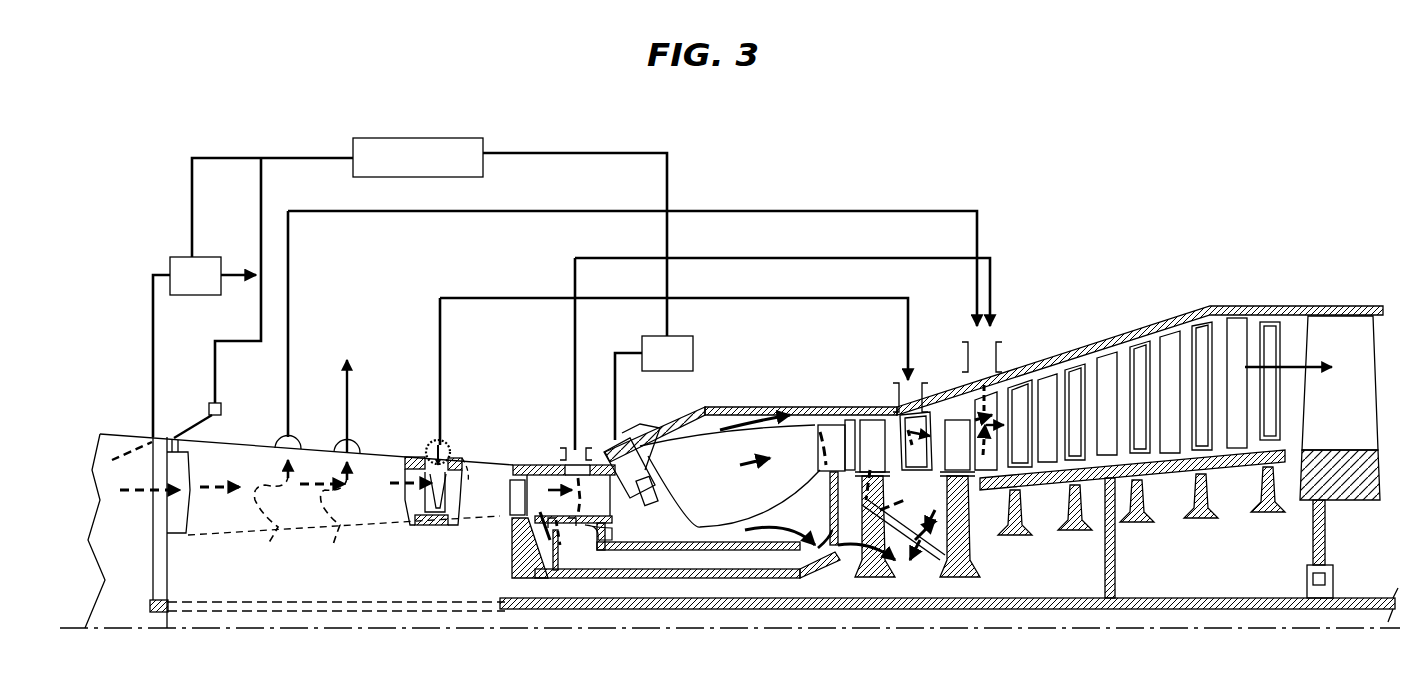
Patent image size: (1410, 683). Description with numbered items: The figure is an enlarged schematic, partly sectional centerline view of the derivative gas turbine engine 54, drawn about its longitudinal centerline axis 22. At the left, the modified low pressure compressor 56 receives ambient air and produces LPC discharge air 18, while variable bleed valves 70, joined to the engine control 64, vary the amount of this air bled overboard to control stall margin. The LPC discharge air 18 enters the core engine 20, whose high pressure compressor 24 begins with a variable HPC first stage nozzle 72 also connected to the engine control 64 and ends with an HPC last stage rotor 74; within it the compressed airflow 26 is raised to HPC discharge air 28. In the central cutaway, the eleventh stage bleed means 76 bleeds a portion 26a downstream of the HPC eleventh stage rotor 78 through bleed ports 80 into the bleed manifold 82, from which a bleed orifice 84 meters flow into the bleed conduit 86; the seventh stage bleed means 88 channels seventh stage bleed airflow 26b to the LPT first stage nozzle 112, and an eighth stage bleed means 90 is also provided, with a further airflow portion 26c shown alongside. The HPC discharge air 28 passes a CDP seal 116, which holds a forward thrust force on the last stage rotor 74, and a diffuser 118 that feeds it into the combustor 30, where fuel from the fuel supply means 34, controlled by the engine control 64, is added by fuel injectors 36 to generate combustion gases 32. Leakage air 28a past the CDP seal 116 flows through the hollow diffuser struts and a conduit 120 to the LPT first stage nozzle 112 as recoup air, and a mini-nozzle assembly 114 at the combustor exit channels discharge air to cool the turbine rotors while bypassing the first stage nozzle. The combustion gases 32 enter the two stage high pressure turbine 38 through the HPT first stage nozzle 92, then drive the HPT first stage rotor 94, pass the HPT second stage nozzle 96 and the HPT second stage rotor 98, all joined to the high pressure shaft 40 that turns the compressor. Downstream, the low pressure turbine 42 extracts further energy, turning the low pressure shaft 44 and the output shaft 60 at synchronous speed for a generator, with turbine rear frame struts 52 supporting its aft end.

The LPC discharge air 18 is at (148, 512).
The core engine 20 is at (764, 396).
The longitudinal centerline axis 22 is at (265, 630).
The high pressure compressor 24 is at (240, 440).
The compressed airflow 26 is at (405, 490).
The bleed air portion 26a is at (456, 458).
The seventh stage bleed airflow 26b is at (261, 510).
The airflow portion 26c is at (322, 511).
The HPC discharge air 28 is at (540, 468).
The leakage airflow portion 28a is at (608, 532).
The combustor 30 is at (704, 528).
The combustion gases 32 is at (760, 458).
The fuel supply means 34 is at (654, 388).
The fuel injectors 36 is at (618, 432).
The high pressure turbine 38 is at (888, 398).
The high pressure shaft 40 is at (712, 552).
The low pressure turbine 42 is at (1170, 320).
The low pressure shaft 44 is at (1048, 598).
The turbine rear frame struts 52 is at (1299, 346).
The derivative gas turbine engine 54 is at (650, 630).
The low pressure compressor 56 is at (120, 422).
The output shaft 60 is at (1192, 598).
The engine control 64 is at (435, 138).
The variable bleed valves 70 is at (204, 347).
The variable HPC first stage nozzle 72 is at (172, 430).
The HPC last stage rotor 74 is at (516, 470).
The eleventh stage bleed means 76 is at (436, 408).
The HPC eleventh stage rotor 78 is at (428, 526).
The bleed ports 80 is at (426, 446).
The bleed manifold 82 is at (462, 462).
The bleed orifice 84 is at (450, 436).
The bleed conduit 86 is at (500, 298).
The seventh stage bleed means 88 is at (280, 362).
The eighth stage bleed means 90 is at (338, 394).
The HPT first stage nozzle 92 is at (824, 477).
The HPT first stage rotor 94 is at (872, 428).
The HPT second stage nozzle 96 is at (914, 472).
The HPT second stage rotor 98 is at (950, 380).
The LPT first stage nozzle 112 is at (996, 396).
The mini-nozzle assembly 114 is at (810, 555).
The CDP seal 116 is at (572, 552).
The diffuser 118 is at (562, 466).
The conduit 120 is at (823, 258).